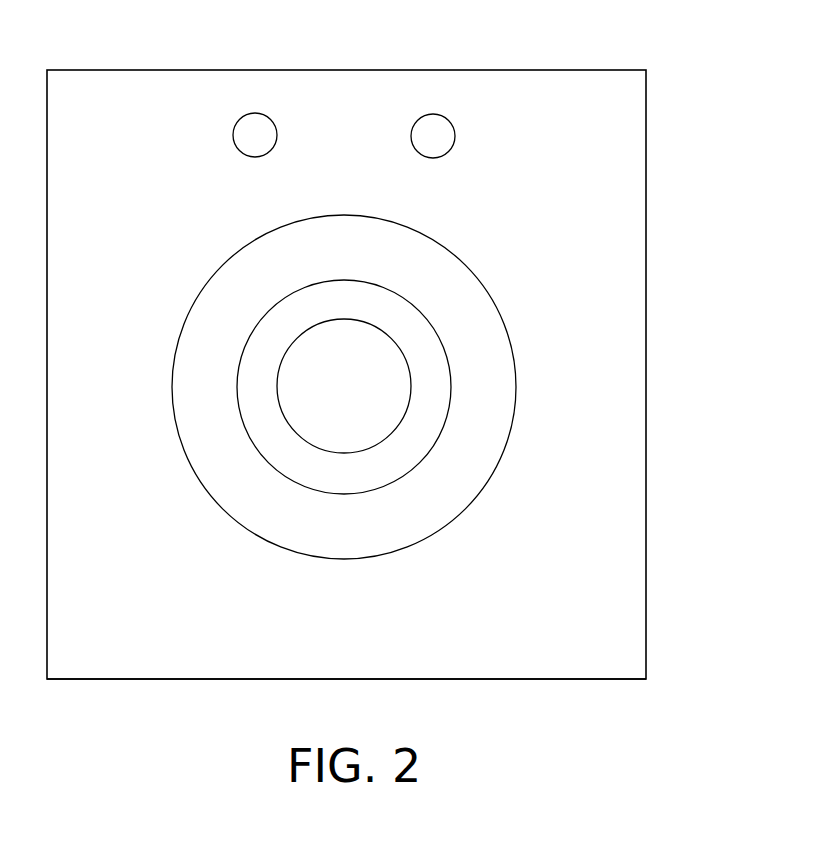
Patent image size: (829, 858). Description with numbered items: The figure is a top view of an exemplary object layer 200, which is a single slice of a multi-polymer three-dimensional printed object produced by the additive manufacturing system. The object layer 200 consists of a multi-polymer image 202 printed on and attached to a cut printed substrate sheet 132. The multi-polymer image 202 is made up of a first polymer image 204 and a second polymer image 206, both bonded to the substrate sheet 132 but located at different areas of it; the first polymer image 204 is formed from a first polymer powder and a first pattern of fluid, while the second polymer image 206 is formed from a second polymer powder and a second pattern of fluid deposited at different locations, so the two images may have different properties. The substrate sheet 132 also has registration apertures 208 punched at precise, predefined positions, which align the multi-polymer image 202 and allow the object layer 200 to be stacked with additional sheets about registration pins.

The object layer 200 is at (410, 58).
The cut printed substrate sheet 132 is at (315, 677).
The multi-polymer image 202 is at (495, 278).
The first polymer image 204 is at (361, 486).
The second polymer image 206 is at (361, 536).
The registration apertures 208 is at (233, 135).